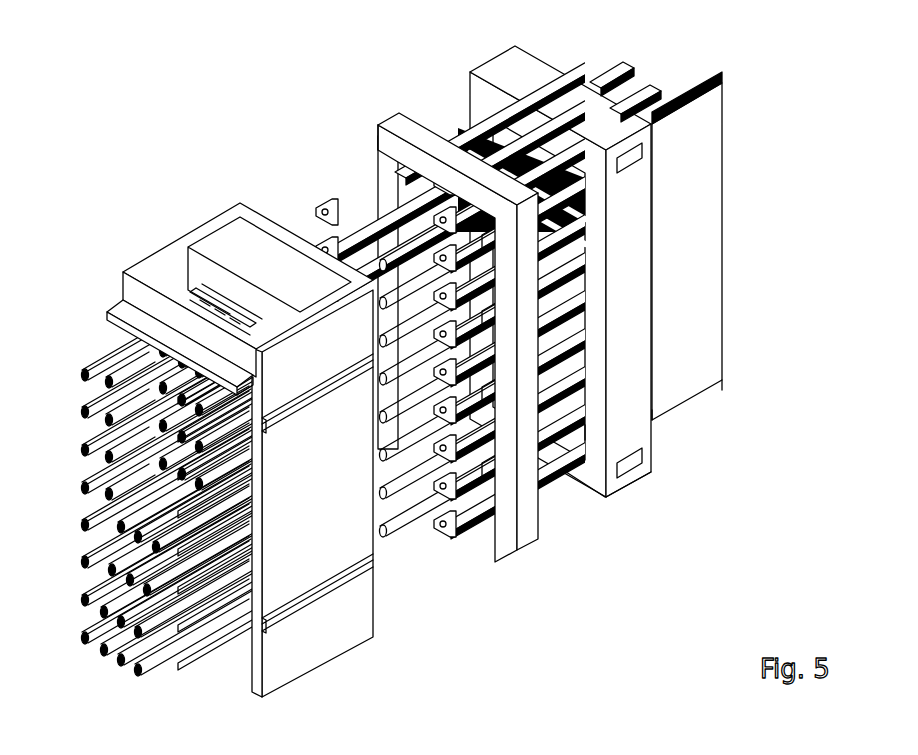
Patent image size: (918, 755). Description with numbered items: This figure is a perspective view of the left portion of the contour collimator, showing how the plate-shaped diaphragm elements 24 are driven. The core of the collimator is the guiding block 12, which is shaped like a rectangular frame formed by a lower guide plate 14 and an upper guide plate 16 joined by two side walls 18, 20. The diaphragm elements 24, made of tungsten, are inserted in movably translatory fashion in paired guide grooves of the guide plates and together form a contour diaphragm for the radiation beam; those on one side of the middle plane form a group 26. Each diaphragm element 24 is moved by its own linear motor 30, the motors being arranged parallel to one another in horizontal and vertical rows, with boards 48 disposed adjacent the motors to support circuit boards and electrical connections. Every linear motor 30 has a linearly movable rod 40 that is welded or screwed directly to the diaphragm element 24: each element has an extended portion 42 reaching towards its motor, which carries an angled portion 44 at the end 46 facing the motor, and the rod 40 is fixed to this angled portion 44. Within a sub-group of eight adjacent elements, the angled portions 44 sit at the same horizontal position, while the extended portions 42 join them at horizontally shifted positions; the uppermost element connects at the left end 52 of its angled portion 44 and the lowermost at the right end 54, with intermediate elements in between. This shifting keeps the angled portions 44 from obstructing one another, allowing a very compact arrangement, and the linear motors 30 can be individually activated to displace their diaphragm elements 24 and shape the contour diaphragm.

The guiding block 12 is at (628, 482).
The lower guide plate 14 is at (563, 470).
The upper guide plate 16 is at (512, 77).
The side wall 18 is at (478, 115).
The side wall 20 is at (638, 428).
The diaphragm element 24 is at (697, 280).
The group of diaphragm elements 26 is at (716, 408).
The linear motor 30 is at (232, 300).
The rod 40 is at (95, 365).
The extended portion 42 is at (363, 227).
The angled portion 44 is at (318, 245).
The end 46 is at (585, 432).
The board 48 is at (123, 307).
The left end 52 is at (303, 252).
The right end 54 is at (445, 522).